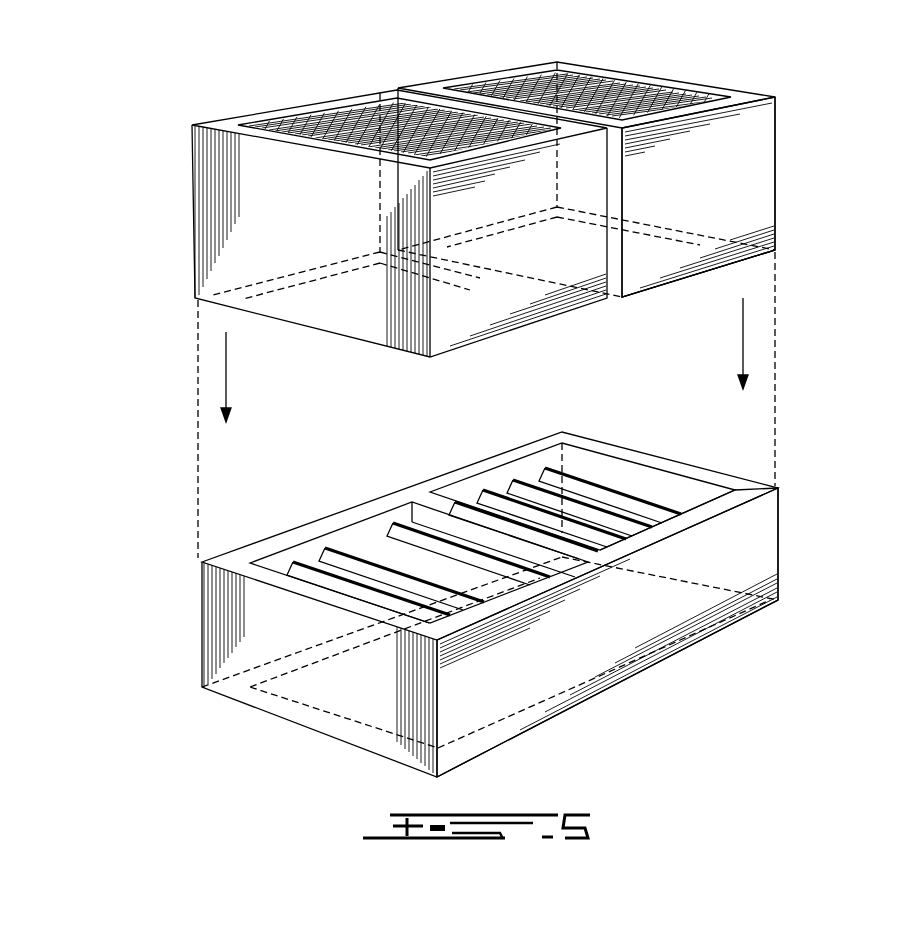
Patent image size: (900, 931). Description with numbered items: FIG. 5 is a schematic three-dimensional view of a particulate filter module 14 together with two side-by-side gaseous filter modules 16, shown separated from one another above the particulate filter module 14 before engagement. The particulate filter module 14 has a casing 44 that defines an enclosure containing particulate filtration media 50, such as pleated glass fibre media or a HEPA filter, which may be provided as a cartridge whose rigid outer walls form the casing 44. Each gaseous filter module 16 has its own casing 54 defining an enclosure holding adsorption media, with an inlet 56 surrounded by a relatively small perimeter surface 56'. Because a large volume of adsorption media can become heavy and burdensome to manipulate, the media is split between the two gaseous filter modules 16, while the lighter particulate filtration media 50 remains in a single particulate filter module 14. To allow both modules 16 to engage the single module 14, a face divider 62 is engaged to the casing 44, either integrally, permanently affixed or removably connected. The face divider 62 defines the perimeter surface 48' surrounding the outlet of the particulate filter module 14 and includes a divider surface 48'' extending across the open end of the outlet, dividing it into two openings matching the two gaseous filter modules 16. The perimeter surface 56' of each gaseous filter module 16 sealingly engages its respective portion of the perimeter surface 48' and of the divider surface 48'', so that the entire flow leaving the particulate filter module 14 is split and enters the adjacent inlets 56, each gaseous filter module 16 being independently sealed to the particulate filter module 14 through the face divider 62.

The particulate filter module 14 is at (187, 641).
The gaseous filter module 16 is at (415, 72).
The casing 44 is at (745, 547).
The perimeter surface 48' is at (734, 502).
The divider surface 48'' is at (498, 495).
The particulate filtration media 50 is at (382, 556).
The casing 54 is at (728, 150).
The inlet 56 is at (706, 290).
The perimeter surface 56' is at (744, 273).
The face divider 62 is at (619, 440).